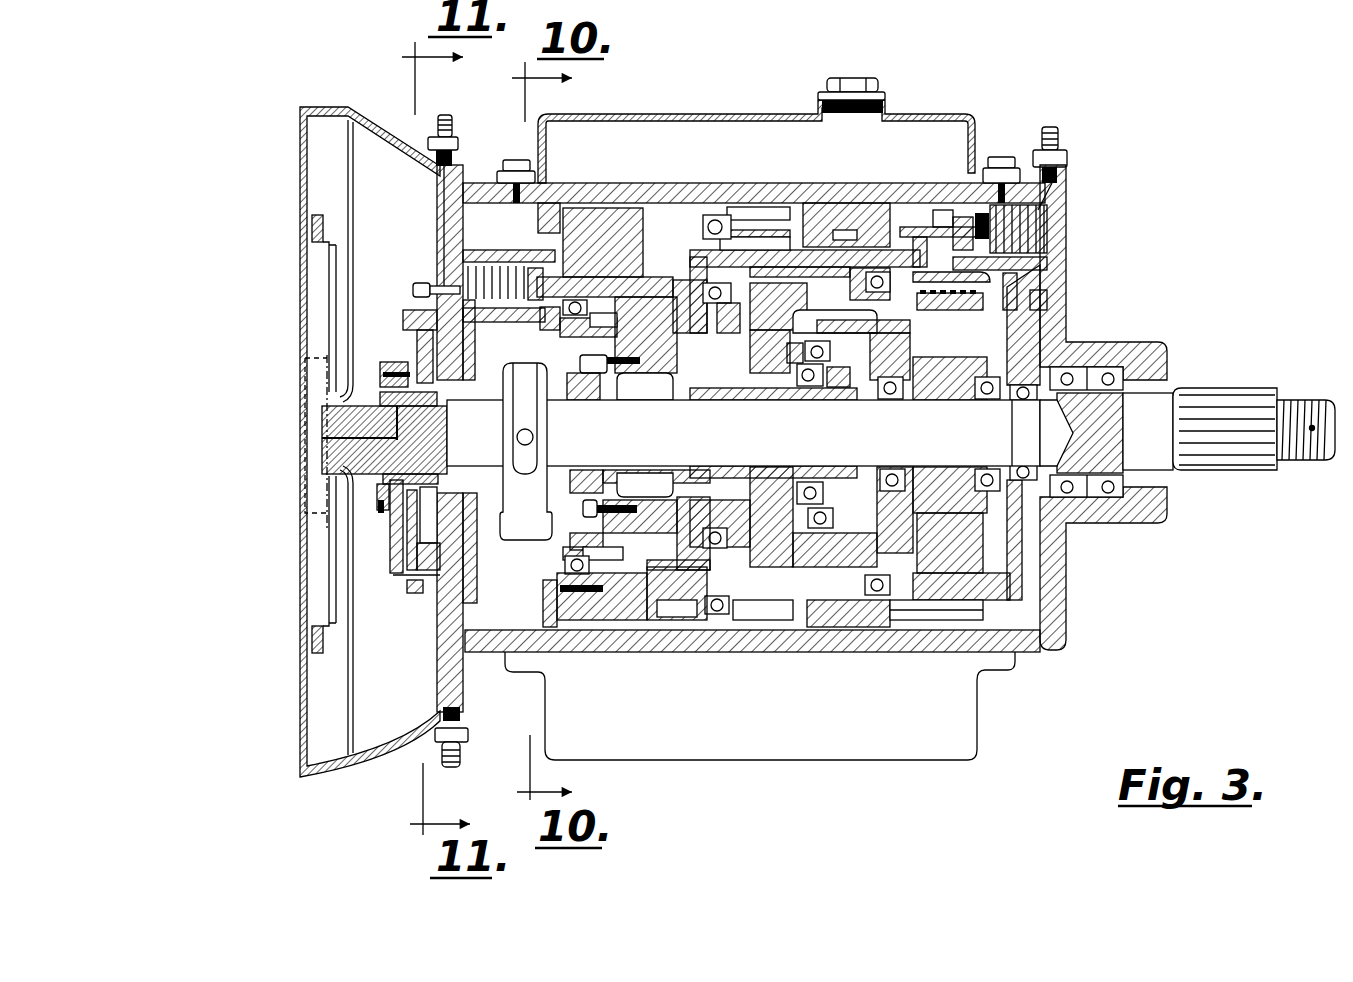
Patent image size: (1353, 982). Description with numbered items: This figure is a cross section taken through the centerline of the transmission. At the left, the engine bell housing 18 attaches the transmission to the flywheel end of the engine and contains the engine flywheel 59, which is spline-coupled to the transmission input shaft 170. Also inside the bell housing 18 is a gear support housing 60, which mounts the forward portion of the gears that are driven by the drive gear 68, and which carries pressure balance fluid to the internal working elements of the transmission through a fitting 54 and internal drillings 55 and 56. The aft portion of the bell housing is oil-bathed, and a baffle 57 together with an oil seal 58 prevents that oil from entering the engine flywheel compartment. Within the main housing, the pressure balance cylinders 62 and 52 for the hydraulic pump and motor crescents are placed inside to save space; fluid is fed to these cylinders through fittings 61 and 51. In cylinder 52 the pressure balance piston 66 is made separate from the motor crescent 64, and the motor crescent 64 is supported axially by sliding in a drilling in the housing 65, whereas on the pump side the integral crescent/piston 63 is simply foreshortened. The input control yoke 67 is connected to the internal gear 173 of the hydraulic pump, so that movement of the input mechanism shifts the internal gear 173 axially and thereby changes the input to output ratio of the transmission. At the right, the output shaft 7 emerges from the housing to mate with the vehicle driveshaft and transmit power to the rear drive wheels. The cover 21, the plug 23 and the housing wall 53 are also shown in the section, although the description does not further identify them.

The output shaft 7 is at (1213, 474).
The engine bell housing 18 is at (352, 112).
The housing cover 21 is at (700, 111).
The breather plug 23 is at (885, 84).
The fitting 51 is at (1068, 153).
The pressure balance cylinder 52 is at (1030, 289).
The lower housing wall 53 is at (1063, 580).
The fitting 54 is at (468, 735).
The internal drilling 55 is at (448, 657).
The internal drilling 56 is at (416, 575).
The baffle 57 is at (352, 690).
The oil seal 58 is at (357, 487).
The engine flywheel 59 is at (328, 318).
The gear support housing 60 is at (410, 306).
The fitting 61 is at (458, 140).
The pressure balance cylinder 62 is at (528, 250).
The integral crescent/piston 63 is at (640, 262).
The motor crescent 64 is at (811, 245).
The housing 65 is at (863, 198).
The pressure balance piston 66 is at (936, 222).
The input control yoke 67 is at (548, 473).
The drive gear 68 is at (447, 533).
The transmission input shaft 170 is at (330, 422).
The internal gear of the hydraulic pump 173 is at (650, 548).